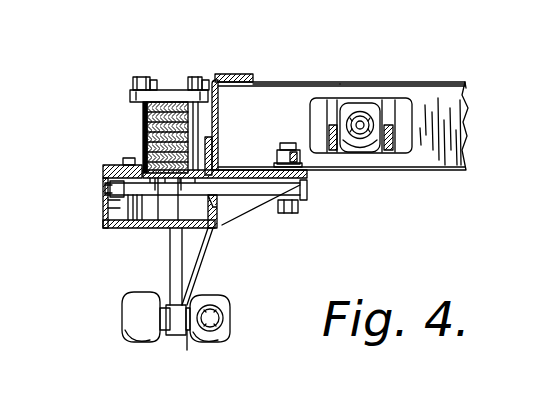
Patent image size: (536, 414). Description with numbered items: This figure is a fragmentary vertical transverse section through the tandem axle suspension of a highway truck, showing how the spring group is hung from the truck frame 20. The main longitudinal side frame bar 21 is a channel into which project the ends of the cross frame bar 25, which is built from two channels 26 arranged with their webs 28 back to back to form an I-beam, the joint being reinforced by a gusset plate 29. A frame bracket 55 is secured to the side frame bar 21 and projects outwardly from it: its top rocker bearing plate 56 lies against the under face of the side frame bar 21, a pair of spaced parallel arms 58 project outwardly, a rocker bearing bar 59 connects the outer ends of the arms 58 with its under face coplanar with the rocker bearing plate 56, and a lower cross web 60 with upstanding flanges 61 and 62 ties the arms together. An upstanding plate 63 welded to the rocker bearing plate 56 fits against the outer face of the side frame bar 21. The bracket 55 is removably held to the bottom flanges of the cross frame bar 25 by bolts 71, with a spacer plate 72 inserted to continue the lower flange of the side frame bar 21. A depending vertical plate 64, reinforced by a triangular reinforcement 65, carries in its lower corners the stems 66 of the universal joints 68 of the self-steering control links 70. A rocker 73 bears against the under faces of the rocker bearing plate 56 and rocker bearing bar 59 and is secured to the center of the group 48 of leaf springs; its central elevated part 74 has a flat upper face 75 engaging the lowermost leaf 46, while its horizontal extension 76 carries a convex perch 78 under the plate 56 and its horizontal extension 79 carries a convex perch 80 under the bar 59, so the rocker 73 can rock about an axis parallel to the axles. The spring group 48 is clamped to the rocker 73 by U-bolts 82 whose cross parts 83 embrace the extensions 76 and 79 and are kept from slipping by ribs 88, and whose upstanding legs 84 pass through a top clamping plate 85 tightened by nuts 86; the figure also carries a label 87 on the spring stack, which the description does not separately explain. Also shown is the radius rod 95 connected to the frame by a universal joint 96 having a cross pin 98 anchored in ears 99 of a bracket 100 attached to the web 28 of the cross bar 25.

The frame 20 is at (258, 71).
The main longitudinal side frame bar 21 is at (234, 78).
The cross frame bar 25 is at (427, 77).
The channel 26 is at (466, 84).
The web 28 is at (461, 116).
The gusset plate 29 is at (316, 82).
The lowermost leaf 46 is at (177, 199).
The group of main leaf springs 48 is at (139, 118).
The frame bracket 55 is at (102, 234).
The rocker bearing plate 56 is at (309, 178).
The arm 58 is at (307, 199).
The rocker bearing bar 59 is at (114, 165).
The lower cross web 60 is at (128, 229).
The upstanding flange 61 is at (103, 213).
The upstanding flange 62 is at (214, 229).
The upstanding plate 63 is at (212, 138).
The vertical plate 64 is at (170, 266).
The triangular reinforcement 65 is at (196, 268).
The stem 66 is at (185, 349).
The universal joint 68 is at (116, 322).
The self-steering control link 70 is at (230, 323).
The bolt 71 is at (293, 214).
The spacer plate 72 is at (277, 161).
The rocker 73 is at (96, 190).
The central elevated part 74 is at (159, 199).
The flat upper face 75 is at (143, 222).
The horizontal extension 76 is at (238, 189).
The perch 78 is at (261, 205).
The horizontal extension 79 is at (110, 190).
The perch 80 is at (104, 170).
The U-bolt 82 is at (141, 77).
The cross part 83 is at (135, 224).
The upstanding leg 84 is at (199, 115).
The top clamping plate 85 is at (130, 95).
The nut 86 is at (154, 82).
The spring 87 is at (147, 134).
The rib 88 is at (128, 222).
The radius rod 95 is at (362, 122).
The universal joint 96 is at (353, 104).
The cross pin 98 is at (339, 114).
The ear 99 is at (330, 118).
The bracket 100 is at (312, 131).